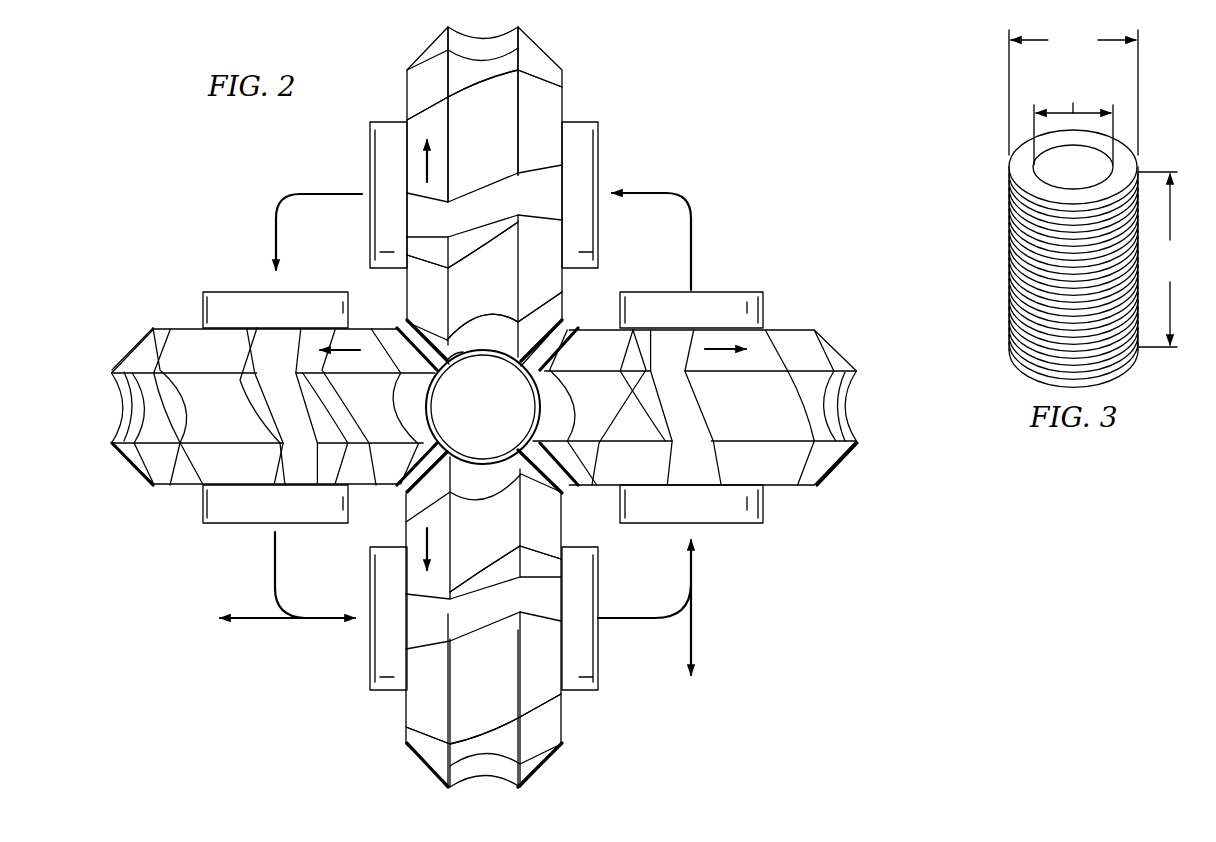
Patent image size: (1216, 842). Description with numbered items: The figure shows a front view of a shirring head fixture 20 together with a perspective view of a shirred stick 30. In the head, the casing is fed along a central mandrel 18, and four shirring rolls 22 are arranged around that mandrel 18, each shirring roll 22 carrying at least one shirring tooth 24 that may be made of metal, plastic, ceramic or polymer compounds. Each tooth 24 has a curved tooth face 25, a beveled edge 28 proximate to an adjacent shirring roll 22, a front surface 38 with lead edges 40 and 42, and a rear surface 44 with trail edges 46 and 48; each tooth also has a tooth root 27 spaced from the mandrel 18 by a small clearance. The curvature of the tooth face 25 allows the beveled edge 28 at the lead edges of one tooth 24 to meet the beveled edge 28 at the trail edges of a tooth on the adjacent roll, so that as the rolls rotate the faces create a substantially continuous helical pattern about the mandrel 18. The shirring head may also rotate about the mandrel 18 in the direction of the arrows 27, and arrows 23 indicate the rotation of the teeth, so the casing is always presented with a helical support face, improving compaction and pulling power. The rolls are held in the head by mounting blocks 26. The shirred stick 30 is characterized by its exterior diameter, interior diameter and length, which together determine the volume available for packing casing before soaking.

In FIG. 2, the mandrel 18 is at (495, 434).
In FIG. 2, the shirring head fixture 20 is at (758, 128).
In FIG. 2, the shirring roll 22 is at (483, 86).
In FIG. 2, the flux direction arrow 23 is at (425, 165).
In FIG. 2, the shirring tooth 24 is at (496, 147).
In FIG. 2, the tooth face 25 is at (130, 422).
In FIG. 2, the clamp bracket 26 is at (388, 122).
In FIG. 2, the tooth root 27 is at (285, 196).
In FIG. 2, the beveled edge 28 is at (556, 328).
In FIG. 3, the shirred stick 30 is at (1156, 151).
In FIG. 2, the front surface 38 is at (478, 330).
In FIG. 2, the lead edge 40 is at (523, 323).
In FIG. 2, the lead edge 42 is at (452, 344).
In FIG. 2, the rear surface 44 is at (242, 378).
In FIG. 2, the trail edge 46 is at (113, 370).
In FIG. 2, the trail edge 48 is at (127, 443).